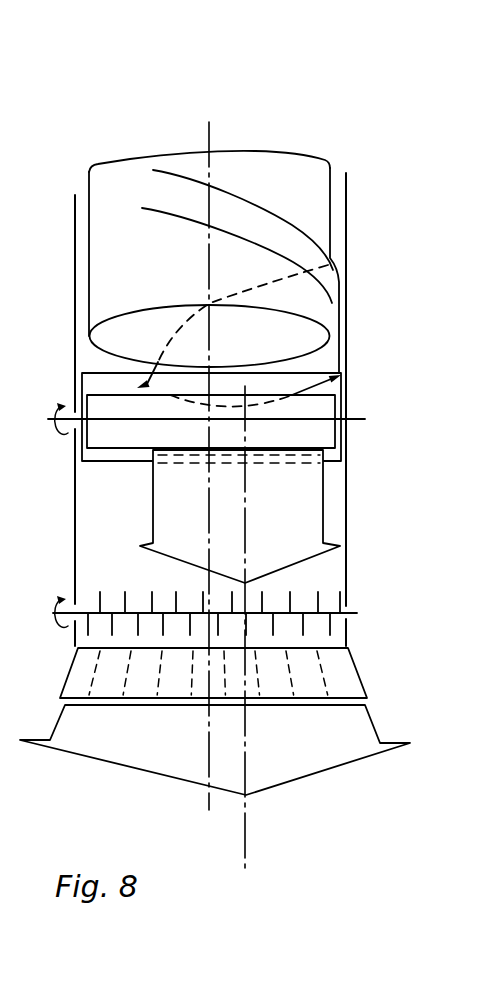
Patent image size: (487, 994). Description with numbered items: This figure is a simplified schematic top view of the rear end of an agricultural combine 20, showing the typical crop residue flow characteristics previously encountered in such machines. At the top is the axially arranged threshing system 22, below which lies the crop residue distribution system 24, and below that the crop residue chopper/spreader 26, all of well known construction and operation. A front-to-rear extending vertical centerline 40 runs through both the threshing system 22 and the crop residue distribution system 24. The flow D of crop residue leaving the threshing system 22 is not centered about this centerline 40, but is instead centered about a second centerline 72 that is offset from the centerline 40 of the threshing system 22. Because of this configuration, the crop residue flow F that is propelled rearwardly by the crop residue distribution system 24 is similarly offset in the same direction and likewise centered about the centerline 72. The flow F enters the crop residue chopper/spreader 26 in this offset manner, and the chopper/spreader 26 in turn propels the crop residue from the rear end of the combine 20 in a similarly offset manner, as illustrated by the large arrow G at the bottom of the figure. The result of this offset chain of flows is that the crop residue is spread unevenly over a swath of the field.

The agricultural combine 20 is at (343, 116).
The axially arranged threshing system 22 is at (338, 164).
The crop residue distribution system 24 is at (352, 400).
The crop residue chopper/spreader 26 is at (360, 597).
The centerline 40 is at (209, 803).
The centerline 72 is at (247, 848).
The flow D is at (345, 364).
The crop residue flow F is at (325, 500).
The large arrow G is at (372, 718).